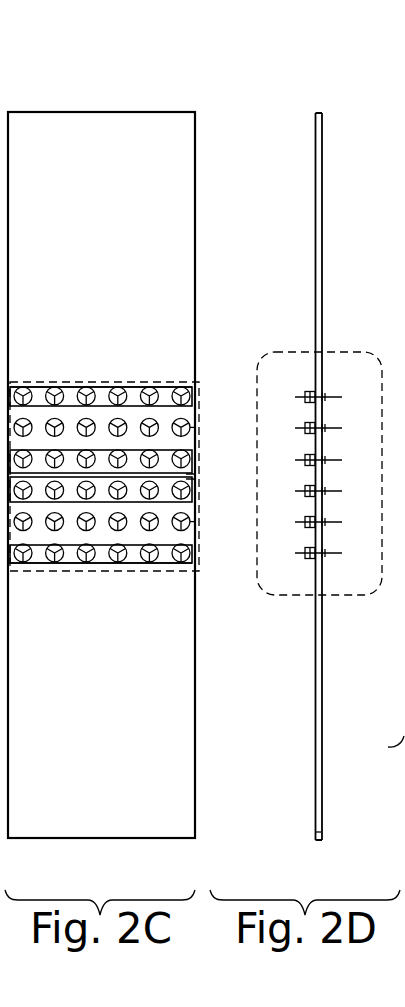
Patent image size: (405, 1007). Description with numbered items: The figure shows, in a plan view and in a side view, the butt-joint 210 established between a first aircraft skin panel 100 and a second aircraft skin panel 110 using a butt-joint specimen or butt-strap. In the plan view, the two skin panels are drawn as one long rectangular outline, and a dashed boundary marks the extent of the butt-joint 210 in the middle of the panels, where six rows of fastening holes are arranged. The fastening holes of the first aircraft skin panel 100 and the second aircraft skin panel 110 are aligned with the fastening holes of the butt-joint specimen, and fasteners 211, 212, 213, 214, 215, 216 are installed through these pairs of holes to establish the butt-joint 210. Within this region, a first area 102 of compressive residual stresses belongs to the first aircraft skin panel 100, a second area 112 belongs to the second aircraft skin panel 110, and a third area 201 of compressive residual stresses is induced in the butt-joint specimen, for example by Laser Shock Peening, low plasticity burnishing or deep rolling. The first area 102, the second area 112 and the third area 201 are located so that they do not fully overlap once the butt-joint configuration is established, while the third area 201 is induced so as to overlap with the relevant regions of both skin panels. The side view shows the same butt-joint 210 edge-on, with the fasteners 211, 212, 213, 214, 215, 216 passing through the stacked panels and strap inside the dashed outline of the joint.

In FIG. 2C, the first aircraft skin panel 100 is at (99, 818).
In FIG. 2C, the first area 102 is at (172, 572).
In FIG. 2C, the second aircraft skin panel 110 is at (93, 146).
In FIG. 2C, the second area 112 is at (163, 380).
In FIG. 2C, the third area 201 is at (185, 477).
In FIG. 2C, the butt-joint 210 is at (203, 437).
In FIG. 2D, the butt-joint 210 is at (259, 356).
In FIG. 2C, the fastener 211 is at (34, 386).
In FIG. 2D, the fastener 211 is at (327, 395).
In FIG. 2C, the fastener 212 is at (32, 421).
In FIG. 2D, the fastener 212 is at (327, 426).
In FIG. 2C, the fastener 213 is at (55, 457).
In FIG. 2D, the fastener 213 is at (327, 458).
In FIG. 2C, the fastener 214 is at (57, 499).
In FIG. 2D, the fastener 214 is at (327, 489).
In FIG. 2C, the fastener 215 is at (32, 492).
In FIG. 2D, the fastener 215 is at (327, 520).
In FIG. 2C, the fastener 216 is at (31, 562).
In FIG. 2D, the fastener 216 is at (327, 551).